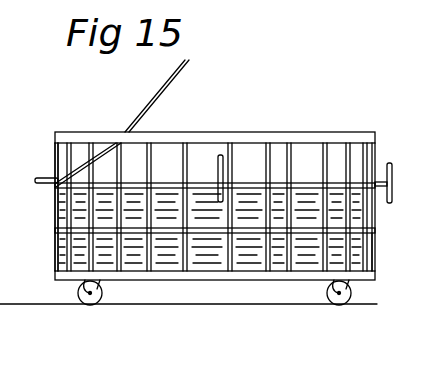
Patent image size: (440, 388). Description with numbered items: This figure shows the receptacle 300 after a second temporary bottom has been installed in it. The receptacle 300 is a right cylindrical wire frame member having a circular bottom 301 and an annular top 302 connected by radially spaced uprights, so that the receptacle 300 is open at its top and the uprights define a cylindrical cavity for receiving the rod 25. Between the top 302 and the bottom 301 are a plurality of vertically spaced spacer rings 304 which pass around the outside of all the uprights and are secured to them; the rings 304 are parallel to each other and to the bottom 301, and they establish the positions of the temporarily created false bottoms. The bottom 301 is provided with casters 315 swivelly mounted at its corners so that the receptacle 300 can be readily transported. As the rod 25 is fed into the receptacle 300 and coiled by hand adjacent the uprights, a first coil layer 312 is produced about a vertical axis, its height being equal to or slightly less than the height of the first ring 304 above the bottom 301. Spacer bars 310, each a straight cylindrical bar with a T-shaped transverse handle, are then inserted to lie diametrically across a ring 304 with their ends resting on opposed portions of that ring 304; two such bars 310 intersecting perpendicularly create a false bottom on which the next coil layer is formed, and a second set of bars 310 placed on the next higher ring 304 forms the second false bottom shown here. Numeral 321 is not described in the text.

The rod 25 is at (163, 93).
The receptacle 300 is at (162, 282).
The circular bottom 301 is at (213, 284).
The annular top 302 is at (220, 132).
The spacer ring 304 is at (55, 188).
The spacer bar 310 is at (216, 170).
The first coil layer 312 is at (372, 248).
The caster 315 is at (91, 304).
The handle bracket 321 is at (371, 211).